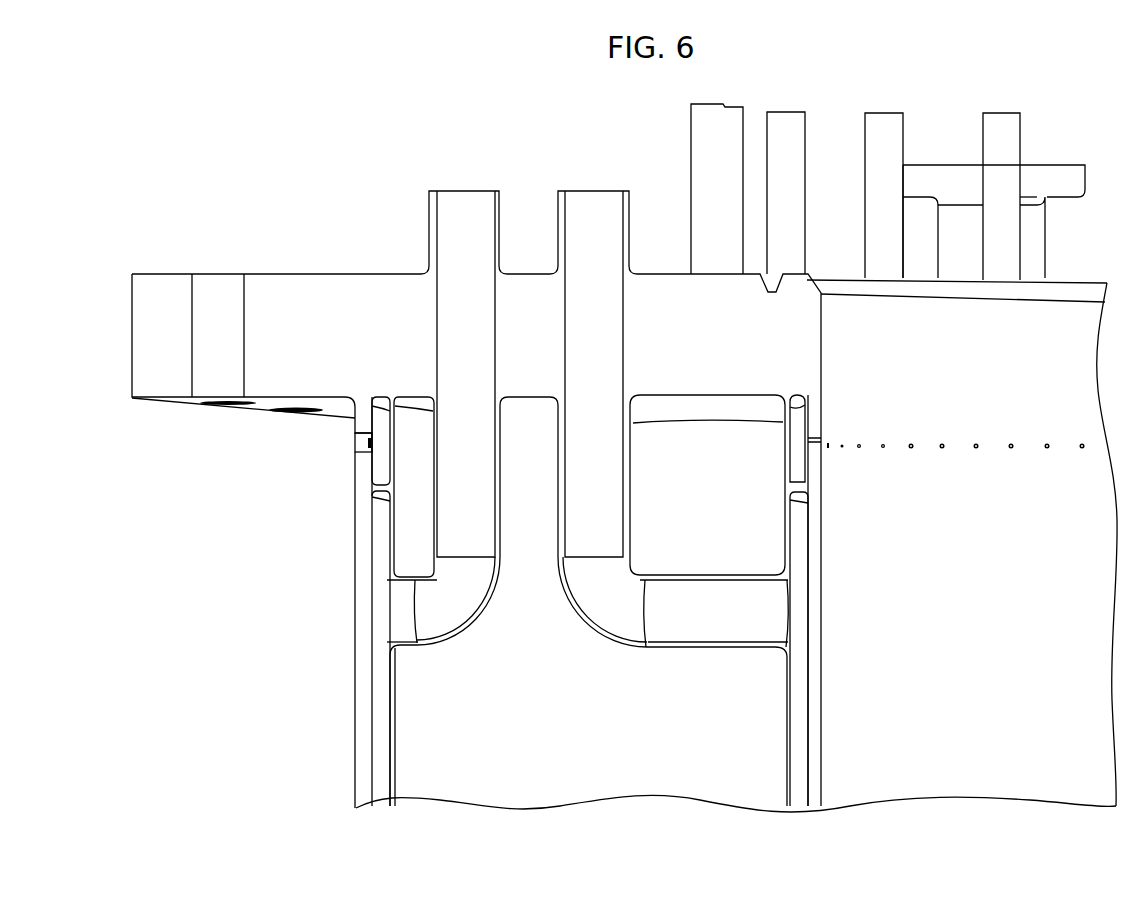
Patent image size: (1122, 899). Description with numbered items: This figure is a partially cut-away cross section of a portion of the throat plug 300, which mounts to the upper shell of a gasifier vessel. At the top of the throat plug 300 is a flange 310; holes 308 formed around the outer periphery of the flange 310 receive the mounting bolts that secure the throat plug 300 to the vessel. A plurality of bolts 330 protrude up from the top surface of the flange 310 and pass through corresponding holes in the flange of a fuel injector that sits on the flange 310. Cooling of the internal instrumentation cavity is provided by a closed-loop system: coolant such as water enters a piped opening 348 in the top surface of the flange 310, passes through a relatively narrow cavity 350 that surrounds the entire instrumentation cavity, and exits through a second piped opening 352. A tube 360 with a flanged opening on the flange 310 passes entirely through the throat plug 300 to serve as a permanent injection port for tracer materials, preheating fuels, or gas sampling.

The throat plug 300 is at (336, 150).
The holes 308 is at (216, 284).
The flange 310 is at (310, 282).
The bolts 330 is at (715, 120).
The piped opening 348 is at (465, 206).
The second piped opening 352 is at (593, 206).
The cavity 350 is at (382, 720).
The tube 360 is at (1054, 172).